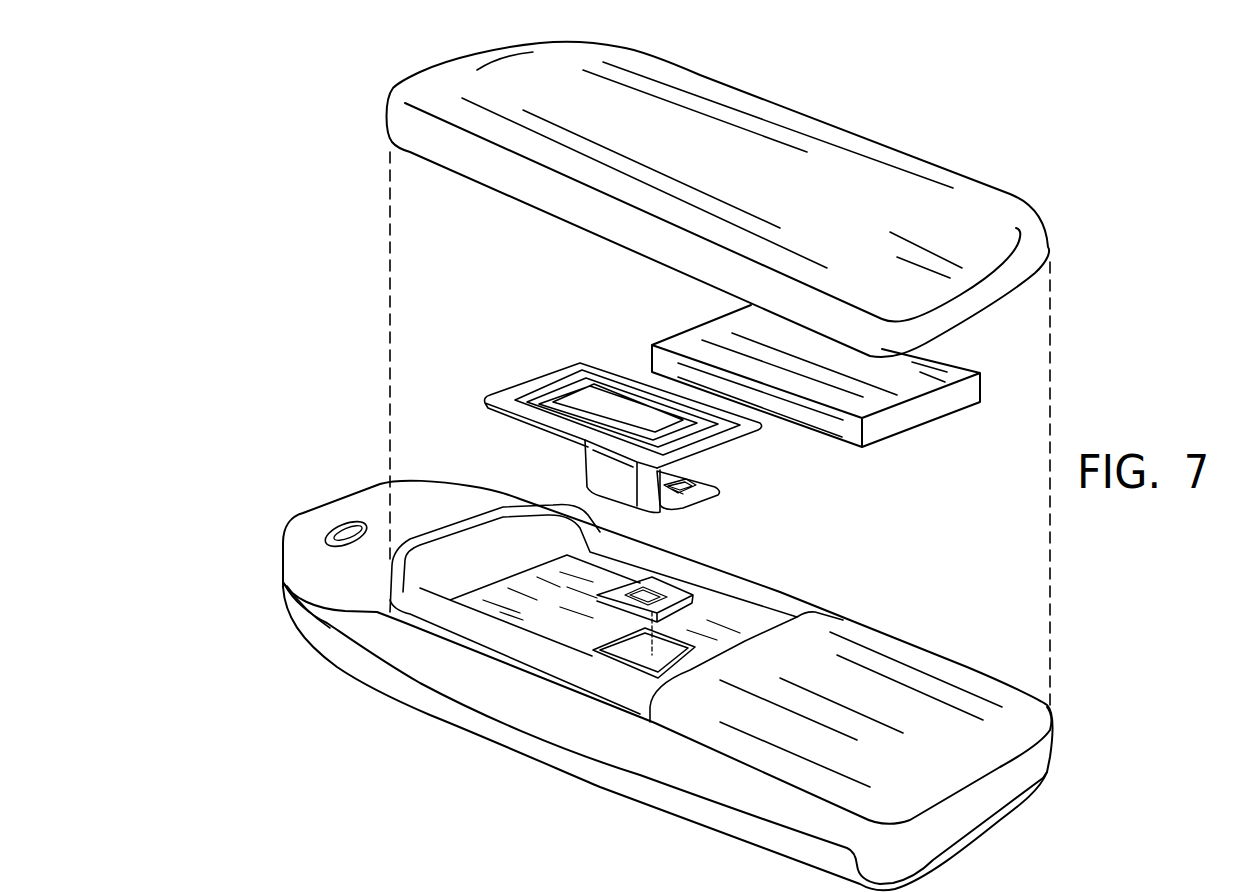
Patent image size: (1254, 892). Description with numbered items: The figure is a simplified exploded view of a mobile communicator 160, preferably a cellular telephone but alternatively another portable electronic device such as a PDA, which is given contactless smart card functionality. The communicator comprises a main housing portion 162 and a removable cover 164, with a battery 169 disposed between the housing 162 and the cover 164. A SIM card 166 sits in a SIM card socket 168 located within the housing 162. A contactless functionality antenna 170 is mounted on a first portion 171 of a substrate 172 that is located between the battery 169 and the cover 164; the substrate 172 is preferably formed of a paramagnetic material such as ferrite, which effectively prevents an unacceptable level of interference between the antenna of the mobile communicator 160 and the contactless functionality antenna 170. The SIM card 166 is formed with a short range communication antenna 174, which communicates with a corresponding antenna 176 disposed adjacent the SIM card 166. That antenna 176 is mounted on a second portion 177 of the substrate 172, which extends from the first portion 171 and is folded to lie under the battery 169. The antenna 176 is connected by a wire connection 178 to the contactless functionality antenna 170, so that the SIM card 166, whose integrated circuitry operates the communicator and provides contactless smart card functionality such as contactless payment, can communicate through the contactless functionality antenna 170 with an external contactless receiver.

The mobile communicator 160 is at (312, 472).
The main housing portion 162 is at (383, 640).
The removable cover 164 is at (900, 173).
The SIM card 166 is at (682, 597).
The SIM card socket 168 is at (640, 658).
The battery 169 is at (957, 403).
The contactless functionality antenna 170 is at (523, 393).
The first portion of substrate 171 is at (507, 416).
The substrate 172 is at (786, 500).
The short range communication antenna 174 is at (637, 598).
The antenna 176 is at (686, 487).
The second portion of substrate 177 is at (670, 503).
The wire connection 178 is at (633, 487).